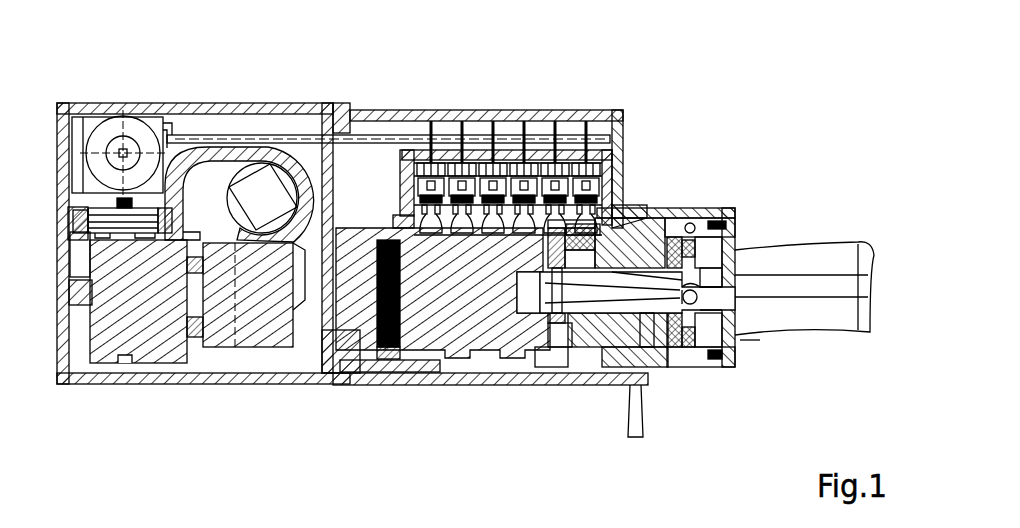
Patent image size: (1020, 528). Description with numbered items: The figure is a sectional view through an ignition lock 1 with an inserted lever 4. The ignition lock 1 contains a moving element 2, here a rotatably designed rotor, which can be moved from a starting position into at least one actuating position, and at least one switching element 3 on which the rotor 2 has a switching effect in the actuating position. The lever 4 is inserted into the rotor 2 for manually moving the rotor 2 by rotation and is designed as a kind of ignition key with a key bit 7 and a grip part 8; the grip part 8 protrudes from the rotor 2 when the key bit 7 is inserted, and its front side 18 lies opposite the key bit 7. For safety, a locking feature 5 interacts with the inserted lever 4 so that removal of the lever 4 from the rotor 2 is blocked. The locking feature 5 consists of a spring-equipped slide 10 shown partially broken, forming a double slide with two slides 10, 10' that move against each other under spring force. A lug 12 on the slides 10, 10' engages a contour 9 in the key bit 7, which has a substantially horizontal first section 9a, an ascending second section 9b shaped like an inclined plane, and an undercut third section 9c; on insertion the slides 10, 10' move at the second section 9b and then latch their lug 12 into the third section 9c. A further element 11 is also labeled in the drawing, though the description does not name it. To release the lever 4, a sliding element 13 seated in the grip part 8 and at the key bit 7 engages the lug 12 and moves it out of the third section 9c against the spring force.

The ignition lock 1 is at (425, 110).
The moving element 2 is at (450, 320).
The switching element 3 is at (531, 188).
The lever 4 is at (803, 348).
The locking feature 5 is at (692, 213).
The key bit 7 is at (633, 208).
The grip part 8 is at (816, 260).
The contour 9 is at (602, 300).
The first section 9a is at (557, 305).
The second section 9b is at (650, 312).
The third section 9c is at (700, 272).
The slide 10 is at (731, 340).
The slide 10' is at (699, 389).
The end nut 11 is at (733, 212).
The lug 12 is at (740, 333).
The sliding element 13 is at (697, 303).
The front side 18 is at (876, 268).